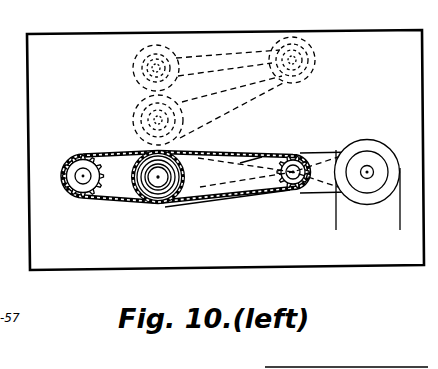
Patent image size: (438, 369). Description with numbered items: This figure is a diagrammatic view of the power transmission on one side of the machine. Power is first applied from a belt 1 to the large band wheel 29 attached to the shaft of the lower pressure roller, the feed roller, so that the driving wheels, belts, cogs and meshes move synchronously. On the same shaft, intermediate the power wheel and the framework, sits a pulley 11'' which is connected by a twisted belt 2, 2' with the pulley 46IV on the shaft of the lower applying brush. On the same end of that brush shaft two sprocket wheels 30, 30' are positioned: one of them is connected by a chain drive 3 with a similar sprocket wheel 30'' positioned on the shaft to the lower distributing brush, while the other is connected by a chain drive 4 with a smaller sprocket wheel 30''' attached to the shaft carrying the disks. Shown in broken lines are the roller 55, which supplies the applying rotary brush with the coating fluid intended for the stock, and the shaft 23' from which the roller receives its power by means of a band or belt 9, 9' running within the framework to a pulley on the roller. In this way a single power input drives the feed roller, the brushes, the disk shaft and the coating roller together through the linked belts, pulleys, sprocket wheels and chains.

The roller 55 is at (150, 67).
The shaft 23' is at (308, 60).
The band or belt 9' is at (228, 60).
The band or belt 9 is at (232, 107).
The chain drive 3 is at (110, 155).
The sprocket wheel 30'' is at (83, 190).
The sprocket wheel 30' is at (158, 187).
The sprocket wheel 30 is at (167, 191).
The pulley 46IV is at (165, 151).
The smaller sprocket wheel 30''' is at (293, 188).
The twisted belt 2' is at (274, 172).
The twisted belt 2 is at (260, 178).
The chain drive 4 is at (253, 152).
The belt 1 is at (336, 221).
The band wheel 29 is at (367, 197).
The band wheel 11'' is at (383, 161).